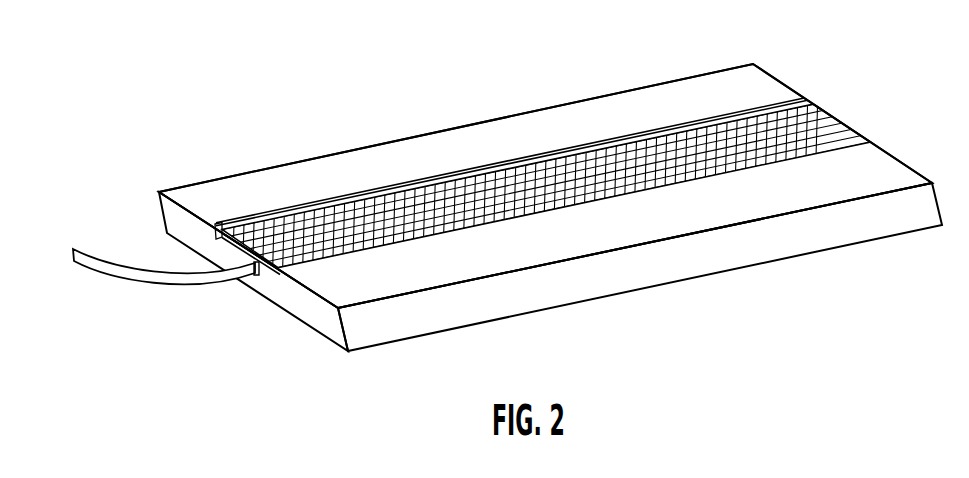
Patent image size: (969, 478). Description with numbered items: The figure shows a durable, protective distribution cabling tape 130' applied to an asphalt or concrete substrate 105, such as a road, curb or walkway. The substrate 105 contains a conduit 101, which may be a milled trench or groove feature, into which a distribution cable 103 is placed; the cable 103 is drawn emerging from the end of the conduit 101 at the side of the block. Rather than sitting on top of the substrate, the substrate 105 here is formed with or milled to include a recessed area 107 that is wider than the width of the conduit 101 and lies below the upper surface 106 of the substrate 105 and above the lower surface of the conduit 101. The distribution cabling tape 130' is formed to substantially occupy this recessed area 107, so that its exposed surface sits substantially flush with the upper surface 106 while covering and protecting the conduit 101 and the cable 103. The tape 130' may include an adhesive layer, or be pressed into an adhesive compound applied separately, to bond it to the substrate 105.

The conduit 101 is at (253, 271).
The distribution cable 103 is at (190, 283).
The substrate 105 is at (636, 232).
The upper surface 106 is at (578, 126).
The recessed area 107 is at (281, 281).
The distribution cabling tape 130' is at (550, 165).